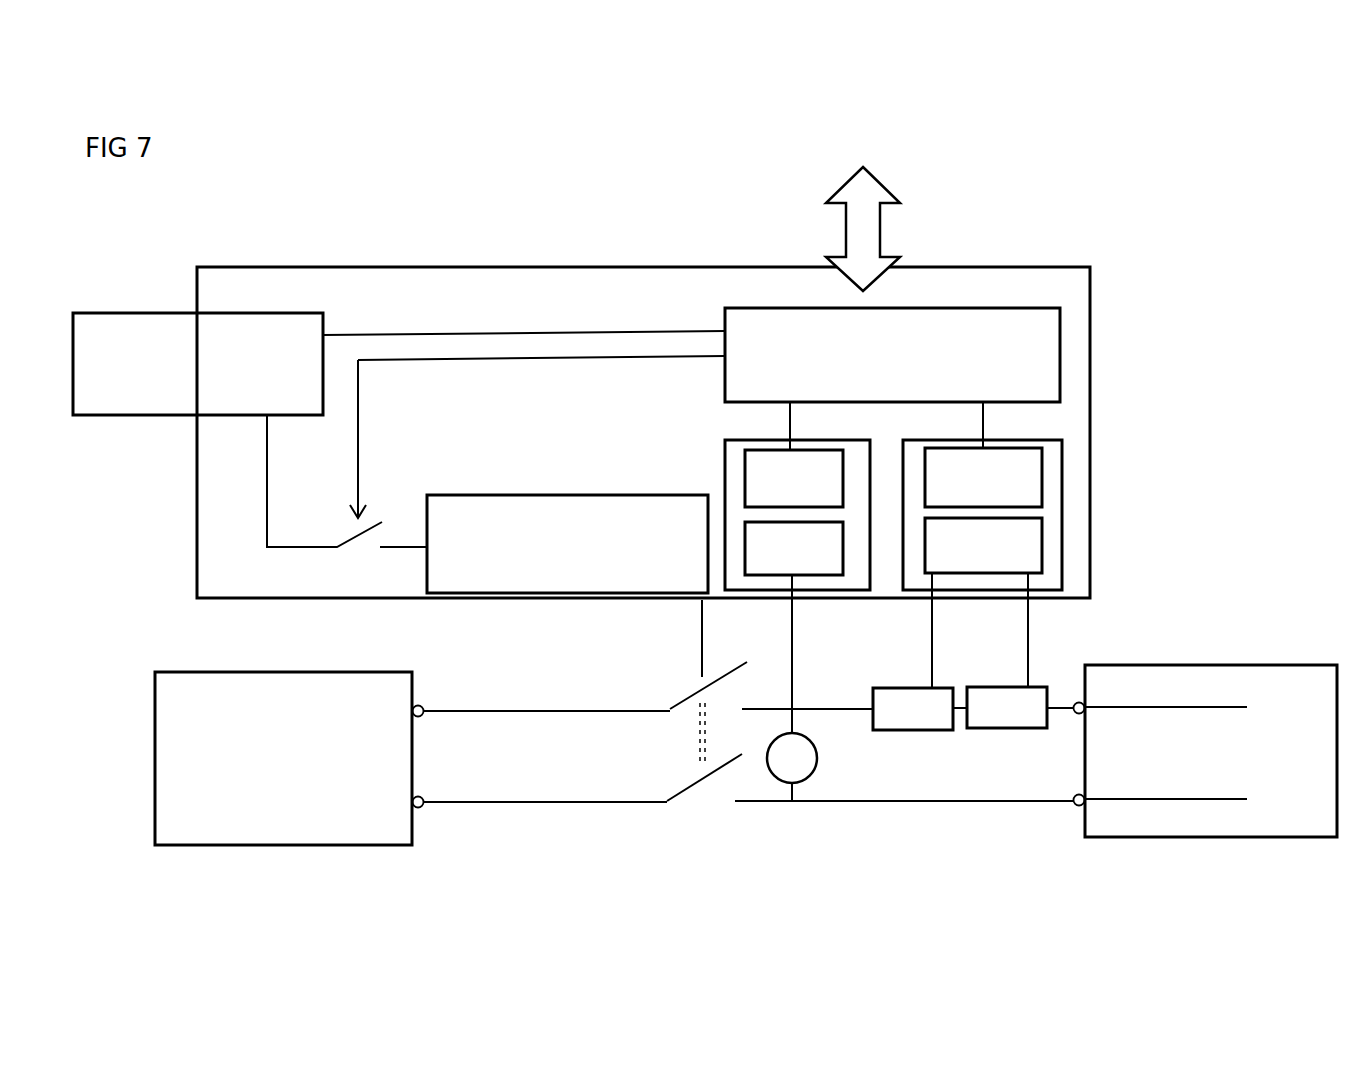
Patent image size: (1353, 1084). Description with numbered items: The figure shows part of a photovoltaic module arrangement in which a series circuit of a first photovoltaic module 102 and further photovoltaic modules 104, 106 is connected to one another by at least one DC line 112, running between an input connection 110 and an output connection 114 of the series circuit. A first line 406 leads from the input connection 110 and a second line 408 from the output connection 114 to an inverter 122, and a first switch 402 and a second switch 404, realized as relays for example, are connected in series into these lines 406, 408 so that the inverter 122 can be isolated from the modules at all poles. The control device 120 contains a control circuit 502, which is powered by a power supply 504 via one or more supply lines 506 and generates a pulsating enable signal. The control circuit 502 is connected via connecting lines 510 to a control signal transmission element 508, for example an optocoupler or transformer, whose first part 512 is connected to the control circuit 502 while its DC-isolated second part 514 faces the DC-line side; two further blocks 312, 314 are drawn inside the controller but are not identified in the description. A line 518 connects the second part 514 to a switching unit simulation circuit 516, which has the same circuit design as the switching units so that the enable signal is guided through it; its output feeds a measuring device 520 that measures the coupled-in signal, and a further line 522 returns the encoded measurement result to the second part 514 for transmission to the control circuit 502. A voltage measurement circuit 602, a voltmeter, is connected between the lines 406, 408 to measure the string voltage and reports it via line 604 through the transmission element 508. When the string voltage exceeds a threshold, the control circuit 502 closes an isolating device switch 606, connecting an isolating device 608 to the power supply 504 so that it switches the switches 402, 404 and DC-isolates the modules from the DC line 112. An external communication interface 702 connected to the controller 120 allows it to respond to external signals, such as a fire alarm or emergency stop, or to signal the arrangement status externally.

The control device 120 is at (997, 264).
The power supply 504 is at (100, 313).
The supply line 506 is at (415, 334).
The external communication interface 702 is at (893, 256).
The control circuit 502 is at (915, 345).
The connecting line 510 is at (790, 402).
The measurement unit 312 is at (815, 495).
The measurement unit 314 is at (815, 560).
The control signal transmission element 508 is at (1042, 438).
The first part 512 is at (1043, 476).
The second part 514 is at (1043, 548).
The isolating device 608 is at (473, 510).
The isolating device switch 606 is at (322, 548).
The line 604 is at (800, 680).
The voltage measurement circuit 602 is at (857, 753).
The line 518 is at (923, 630).
The further line 522 is at (1023, 658).
The switching unit simulation circuit 516 is at (943, 730).
The measuring device 520 is at (1038, 727).
The first switch 402 is at (670, 690).
The second switch 404 is at (685, 802).
The first line 406 is at (580, 714).
The second line 408 is at (895, 802).
The input connection 110 is at (1082, 718).
The output connection 114 is at (1083, 808).
The first photovoltaic module 102 is at (1213, 717).
The photovoltaic module 104 is at (1213, 717).
The third photovoltaic module 106 is at (1238, 626).
The DC line 112 is at (1192, 708).
The inverter 122 is at (233, 832).